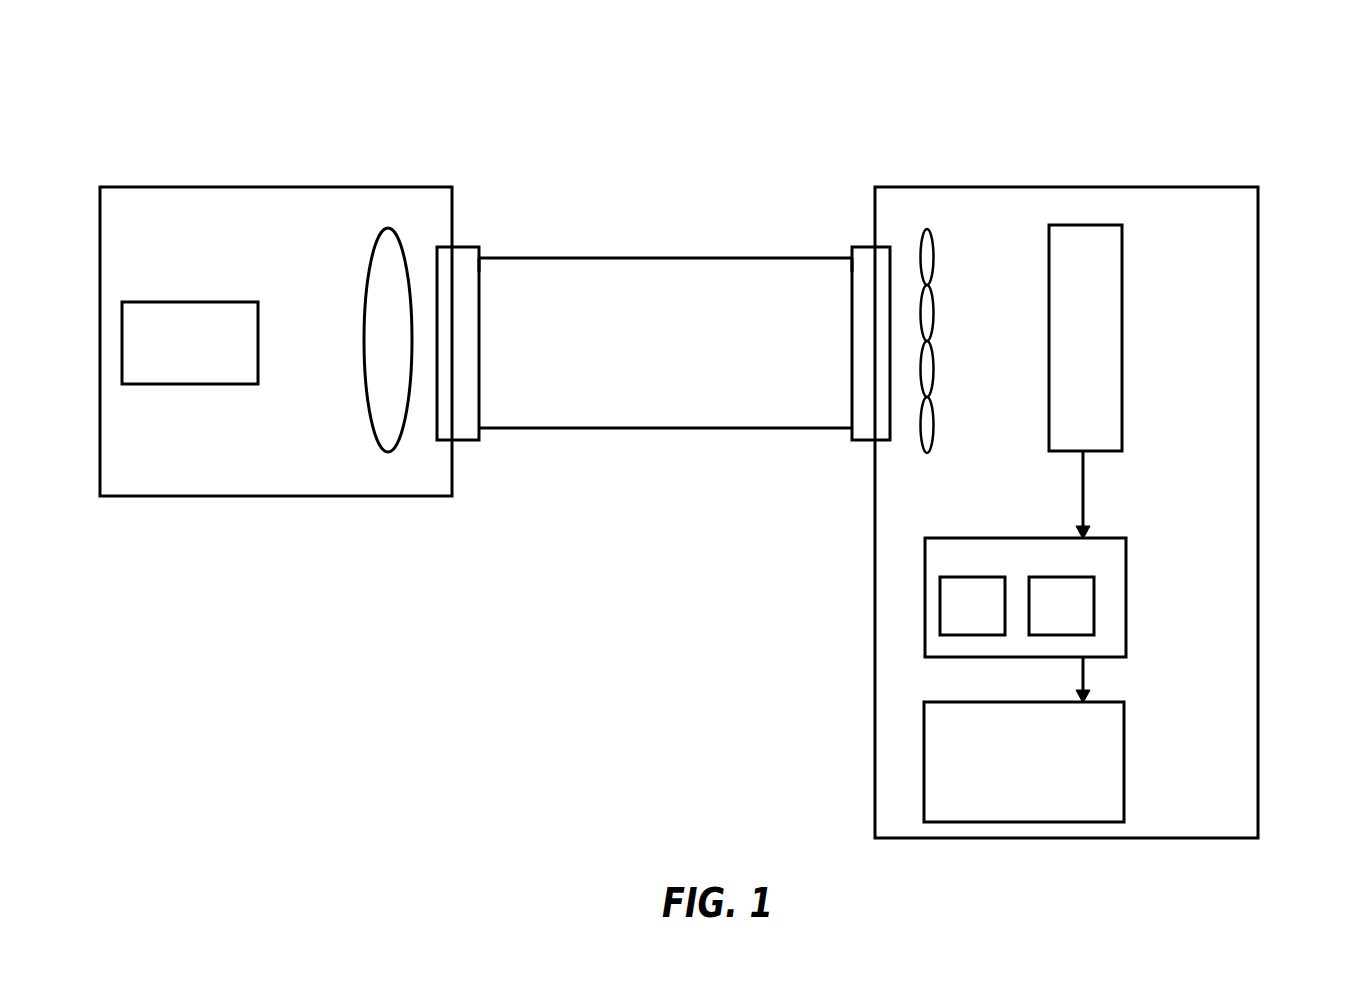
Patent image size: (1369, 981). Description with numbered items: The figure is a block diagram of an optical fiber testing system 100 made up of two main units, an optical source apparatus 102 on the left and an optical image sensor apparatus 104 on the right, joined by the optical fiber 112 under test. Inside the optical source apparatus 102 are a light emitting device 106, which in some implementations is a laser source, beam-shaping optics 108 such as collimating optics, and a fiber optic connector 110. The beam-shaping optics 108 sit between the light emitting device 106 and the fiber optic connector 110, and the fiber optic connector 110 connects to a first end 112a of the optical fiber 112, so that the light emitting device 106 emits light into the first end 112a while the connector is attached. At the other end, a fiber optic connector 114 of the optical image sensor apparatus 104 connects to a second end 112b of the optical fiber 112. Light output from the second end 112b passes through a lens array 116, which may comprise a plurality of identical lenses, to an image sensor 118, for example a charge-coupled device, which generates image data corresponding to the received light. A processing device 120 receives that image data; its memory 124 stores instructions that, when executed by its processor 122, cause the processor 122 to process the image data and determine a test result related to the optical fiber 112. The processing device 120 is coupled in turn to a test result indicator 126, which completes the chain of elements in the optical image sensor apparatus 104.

The optical fiber testing system 100 is at (1258, 81).
The optical source apparatus 102 is at (276, 187).
The optical image sensor apparatus 104 is at (1158, 187).
The light emitting device 106 is at (175, 302).
The beam-shaping optics 108 is at (365, 390).
The fiber optic connector 110 is at (473, 247).
The optical fiber 112 is at (640, 258).
The first end of optical fiber 112a is at (479, 272).
The second end of optical fiber 112b is at (852, 272).
The fiber optic connector 114 is at (871, 246).
The lens array 116 is at (927, 229).
The image sensor 118 is at (1122, 336).
The processing device 120 is at (1126, 598).
The processor 122 is at (1063, 577).
The memory 124 is at (975, 577).
The test result indicator 126 is at (1124, 762).